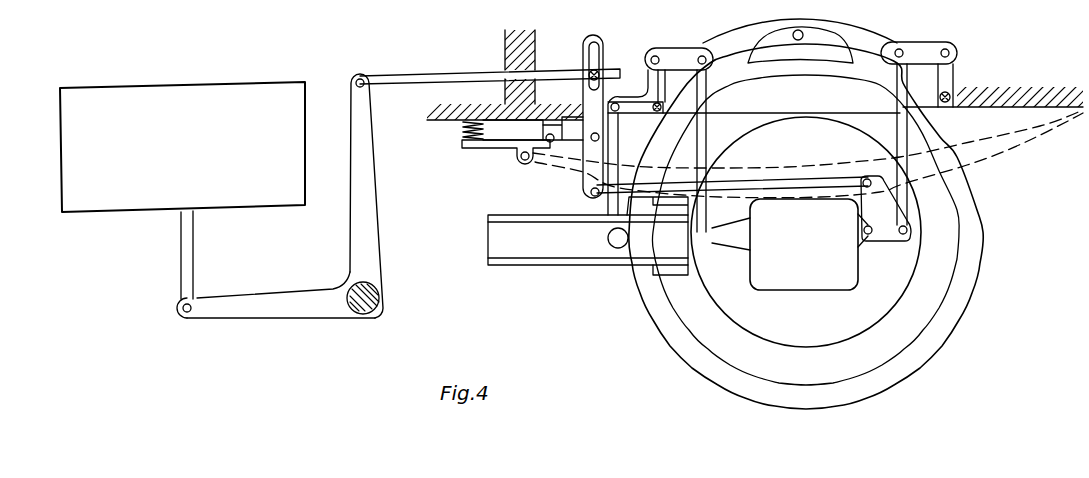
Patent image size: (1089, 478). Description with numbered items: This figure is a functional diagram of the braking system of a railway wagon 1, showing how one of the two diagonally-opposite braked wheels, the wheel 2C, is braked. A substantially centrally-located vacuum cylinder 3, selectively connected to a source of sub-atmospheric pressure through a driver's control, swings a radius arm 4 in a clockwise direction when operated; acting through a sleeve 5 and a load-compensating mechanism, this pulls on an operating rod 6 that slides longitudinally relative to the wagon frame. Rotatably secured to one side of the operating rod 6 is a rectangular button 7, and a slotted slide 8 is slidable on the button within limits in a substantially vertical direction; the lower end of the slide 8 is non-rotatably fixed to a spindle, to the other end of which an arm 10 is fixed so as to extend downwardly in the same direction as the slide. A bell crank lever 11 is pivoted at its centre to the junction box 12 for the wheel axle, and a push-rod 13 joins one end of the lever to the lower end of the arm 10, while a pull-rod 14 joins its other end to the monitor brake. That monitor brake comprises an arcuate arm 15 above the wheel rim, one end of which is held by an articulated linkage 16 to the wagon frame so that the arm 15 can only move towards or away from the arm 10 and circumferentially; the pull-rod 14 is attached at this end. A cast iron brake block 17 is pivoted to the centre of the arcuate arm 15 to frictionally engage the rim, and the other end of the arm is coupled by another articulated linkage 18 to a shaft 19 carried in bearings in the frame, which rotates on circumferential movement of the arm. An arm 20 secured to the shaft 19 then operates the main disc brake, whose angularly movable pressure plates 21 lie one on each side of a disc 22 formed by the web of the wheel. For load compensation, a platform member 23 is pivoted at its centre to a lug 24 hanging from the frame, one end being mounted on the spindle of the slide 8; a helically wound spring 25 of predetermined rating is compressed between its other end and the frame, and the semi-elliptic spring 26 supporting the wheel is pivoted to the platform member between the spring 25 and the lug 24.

The railway wagon 1 is at (1034, 80).
The vacuum cylinder 3 is at (263, 95).
The radius arm 4 is at (285, 312).
The sleeve 5 is at (365, 318).
The operating rod 6 is at (433, 75).
The rectangular button 7 is at (607, 63).
The slotted slide 8 is at (587, 64).
The arm 10 is at (597, 167).
The bell crank lever 11 is at (893, 240).
The junction box 12 is at (803, 275).
The push-rod 13 is at (780, 183).
The pull-rod 14 is at (968, 167).
The arcuate arm 15 is at (876, 42).
The articulated linkage 16 is at (960, 34).
The cast iron brake block 17 is at (770, 47).
The articulated linkage 18 is at (675, 48).
The shaft 19 is at (657, 113).
The arm 20 is at (620, 203).
The pressure plates 21 is at (648, 248).
The disc 22 is at (693, 325).
The platform member 23 is at (487, 148).
The lug 24 is at (513, 129).
The helically wound spring 25 is at (466, 130).
The semi-elliptic spring 26 is at (1040, 133).
The wheel 2C is at (698, 367).